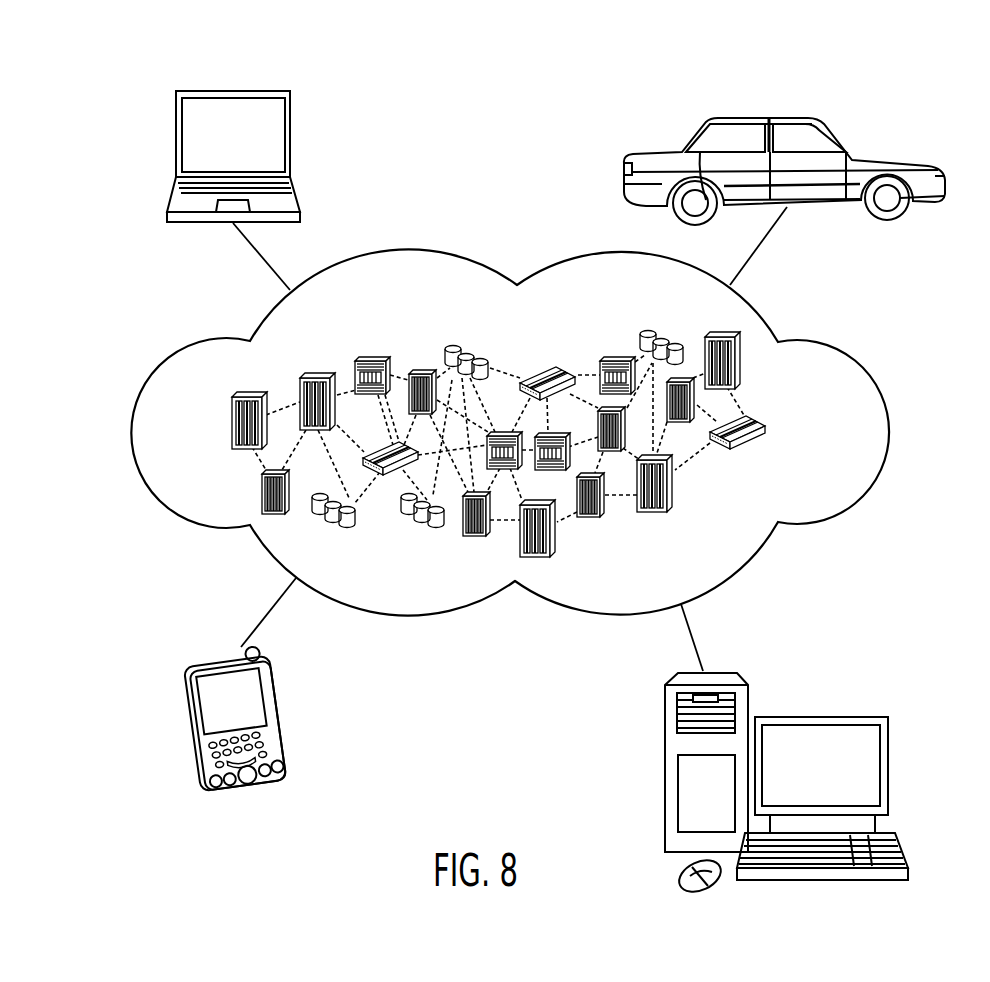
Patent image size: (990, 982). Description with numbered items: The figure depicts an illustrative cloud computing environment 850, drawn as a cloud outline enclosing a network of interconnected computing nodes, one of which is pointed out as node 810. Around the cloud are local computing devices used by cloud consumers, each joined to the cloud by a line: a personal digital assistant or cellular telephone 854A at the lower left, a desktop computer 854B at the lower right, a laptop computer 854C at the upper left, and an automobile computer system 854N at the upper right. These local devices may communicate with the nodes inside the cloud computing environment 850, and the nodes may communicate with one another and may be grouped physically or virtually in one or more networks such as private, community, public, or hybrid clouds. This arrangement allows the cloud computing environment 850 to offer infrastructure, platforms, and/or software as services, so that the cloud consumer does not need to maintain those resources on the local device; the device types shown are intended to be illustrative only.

The cloud computing environment 850 is at (835, 345).
The computing device 810 is at (782, 432).
The personal digital assistant (PDA) or cellular telephone 854A is at (214, 656).
The desktop computer 854B is at (822, 717).
The laptop computer 854C is at (232, 90).
The automobile computer system 854N is at (762, 118).